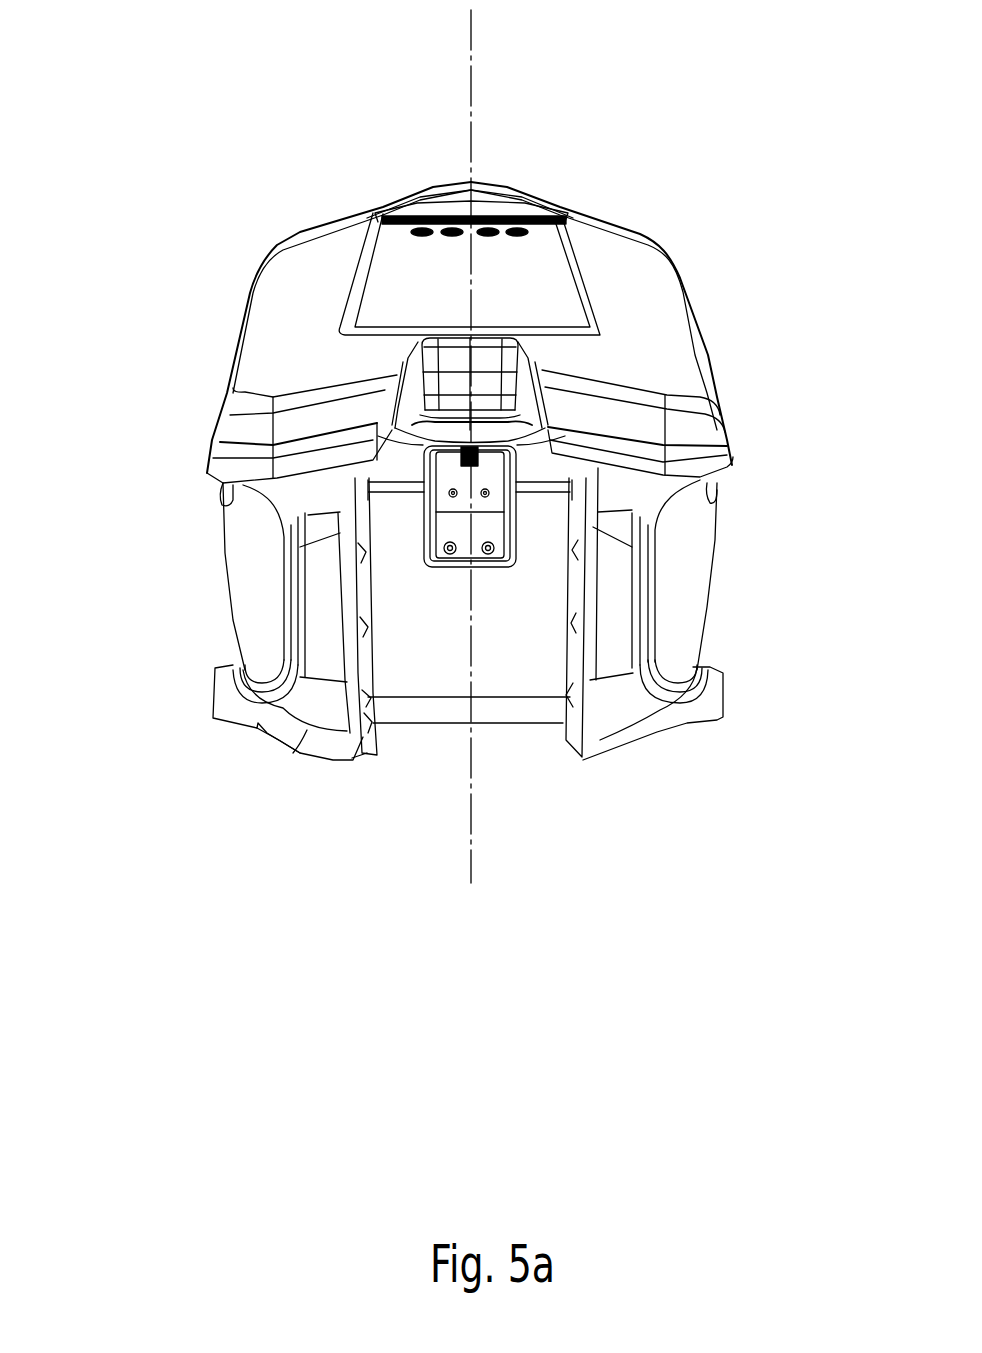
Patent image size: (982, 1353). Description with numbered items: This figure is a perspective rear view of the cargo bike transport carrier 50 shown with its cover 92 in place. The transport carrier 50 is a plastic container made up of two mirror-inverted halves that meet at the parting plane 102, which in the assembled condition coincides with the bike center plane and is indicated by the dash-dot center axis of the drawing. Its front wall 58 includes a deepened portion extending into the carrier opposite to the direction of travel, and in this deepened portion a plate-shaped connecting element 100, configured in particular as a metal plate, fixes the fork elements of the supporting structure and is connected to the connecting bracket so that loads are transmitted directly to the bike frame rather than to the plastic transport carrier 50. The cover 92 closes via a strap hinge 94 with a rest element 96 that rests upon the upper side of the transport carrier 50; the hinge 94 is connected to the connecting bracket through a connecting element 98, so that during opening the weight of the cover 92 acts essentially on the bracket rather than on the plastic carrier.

The cargo bike transport carrier 50 is at (170, 580).
The front wall 58 is at (610, 630).
The cover 92 is at (658, 355).
The strap hinge 94 is at (508, 215).
The rest element 96 is at (645, 235).
The connecting element 98 is at (548, 750).
The plate-shaped connecting element 100 is at (468, 543).
The parting plane 102 is at (469, 101).